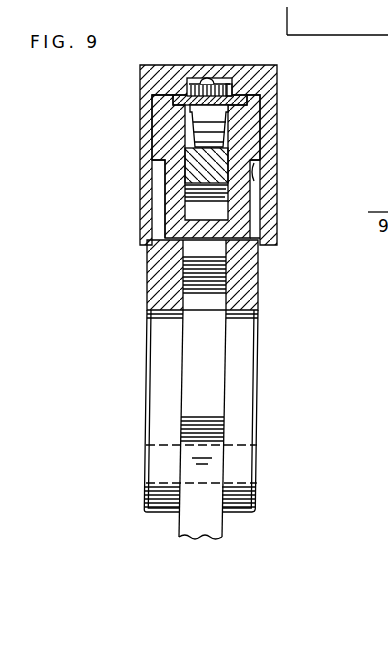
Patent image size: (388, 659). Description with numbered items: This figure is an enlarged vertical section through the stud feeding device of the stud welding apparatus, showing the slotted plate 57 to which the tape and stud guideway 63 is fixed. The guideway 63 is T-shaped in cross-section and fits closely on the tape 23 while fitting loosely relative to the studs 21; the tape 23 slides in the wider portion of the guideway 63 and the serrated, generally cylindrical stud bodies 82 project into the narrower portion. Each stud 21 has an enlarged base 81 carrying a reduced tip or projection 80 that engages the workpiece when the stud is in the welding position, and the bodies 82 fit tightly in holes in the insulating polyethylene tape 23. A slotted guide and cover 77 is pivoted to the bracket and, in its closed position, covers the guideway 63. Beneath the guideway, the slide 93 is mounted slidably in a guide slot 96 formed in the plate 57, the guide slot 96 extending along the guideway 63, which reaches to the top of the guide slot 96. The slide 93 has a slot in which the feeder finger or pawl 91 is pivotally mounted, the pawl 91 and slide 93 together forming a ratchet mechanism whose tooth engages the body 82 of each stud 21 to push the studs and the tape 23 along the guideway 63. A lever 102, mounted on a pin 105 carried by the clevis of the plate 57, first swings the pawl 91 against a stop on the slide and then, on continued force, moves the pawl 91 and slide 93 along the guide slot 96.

The stud 21 is at (233, 85).
The tape 23 is at (248, 100).
The slotted plate 57 is at (250, 285).
The tape and stud guideway 63 is at (263, 142).
The slotted guide and cover 77 is at (277, 72).
The reduced tip or projection 80 is at (214, 82).
The enlarged base 81 is at (205, 81).
The stud body 82 is at (188, 130).
The feeder finger or pawl 91 is at (158, 168).
The slide 93 is at (185, 195).
The guide slot 96 is at (262, 173).
The lever 102 is at (226, 368).
The pin 105 is at (245, 445).